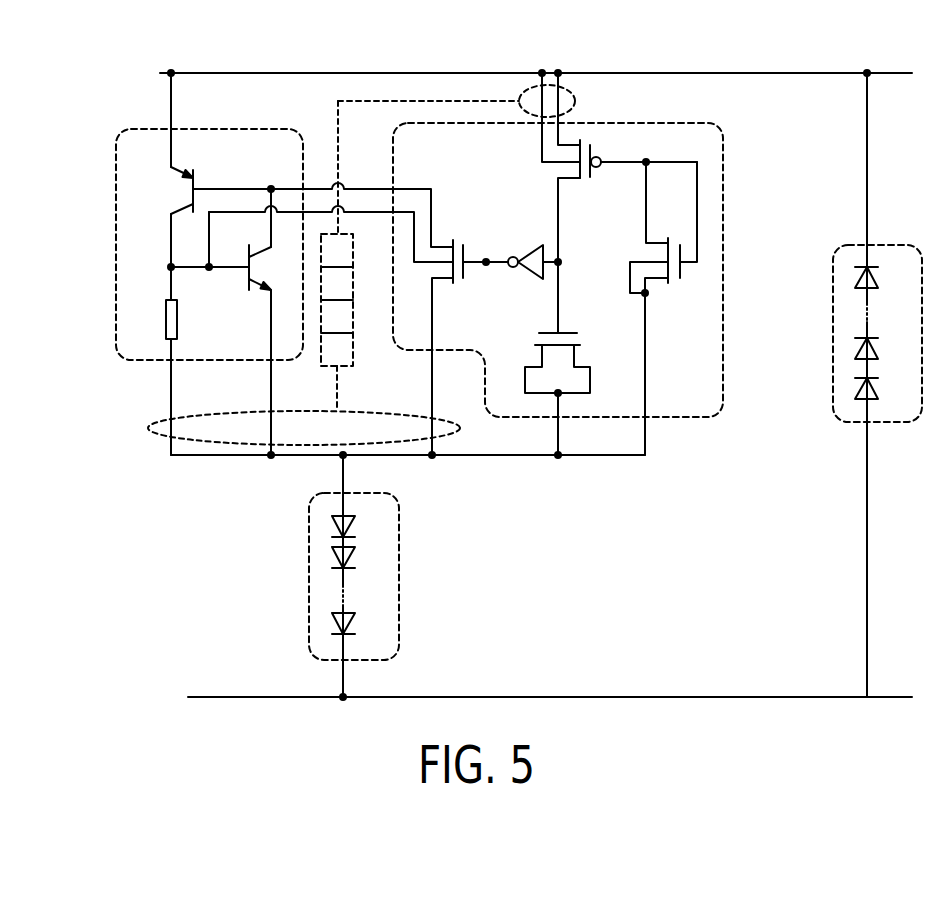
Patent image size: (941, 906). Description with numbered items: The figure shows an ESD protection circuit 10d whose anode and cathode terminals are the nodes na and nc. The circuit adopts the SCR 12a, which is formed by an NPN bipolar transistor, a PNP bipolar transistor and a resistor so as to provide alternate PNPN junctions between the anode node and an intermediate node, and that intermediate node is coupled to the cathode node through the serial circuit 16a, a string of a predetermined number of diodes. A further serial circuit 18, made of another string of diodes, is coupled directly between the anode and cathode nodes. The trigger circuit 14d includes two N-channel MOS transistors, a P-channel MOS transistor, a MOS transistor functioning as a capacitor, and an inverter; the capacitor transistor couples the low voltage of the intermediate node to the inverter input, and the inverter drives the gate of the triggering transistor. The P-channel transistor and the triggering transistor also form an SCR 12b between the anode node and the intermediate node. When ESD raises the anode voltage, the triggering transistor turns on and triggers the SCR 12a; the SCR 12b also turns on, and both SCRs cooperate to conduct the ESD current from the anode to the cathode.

The ESD protection circuit 10d is at (80, 127).
The SCR 12a is at (116, 190).
The SCR 12b is at (345, 368).
The trigger circuit 14d is at (683, 420).
The serial circuit 16a is at (309, 570).
The serial circuit 18 is at (882, 422).